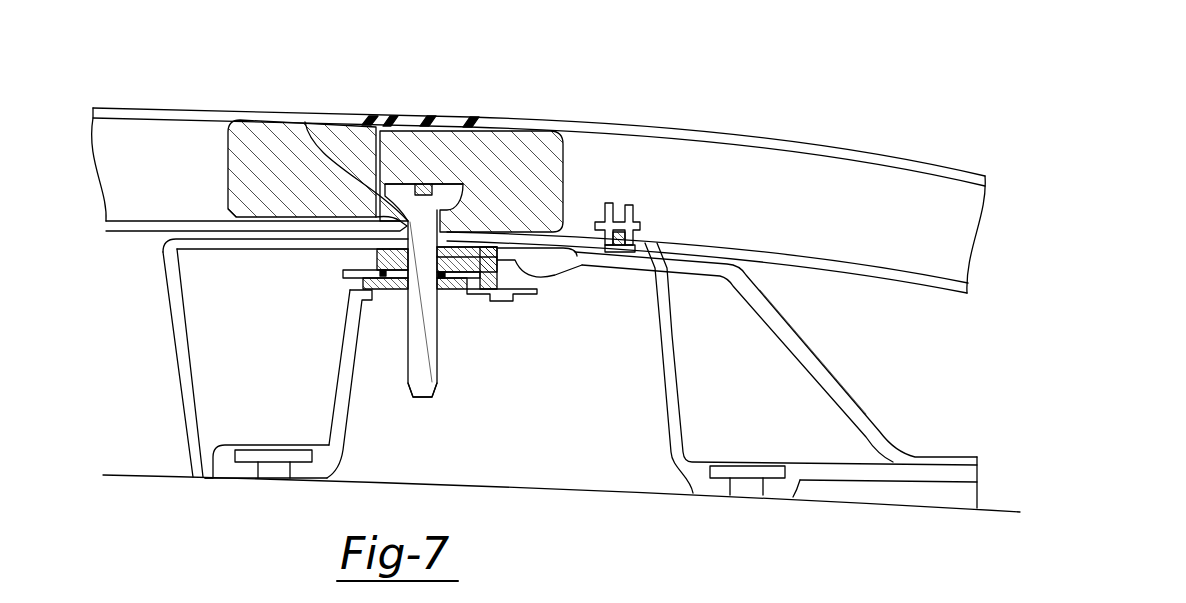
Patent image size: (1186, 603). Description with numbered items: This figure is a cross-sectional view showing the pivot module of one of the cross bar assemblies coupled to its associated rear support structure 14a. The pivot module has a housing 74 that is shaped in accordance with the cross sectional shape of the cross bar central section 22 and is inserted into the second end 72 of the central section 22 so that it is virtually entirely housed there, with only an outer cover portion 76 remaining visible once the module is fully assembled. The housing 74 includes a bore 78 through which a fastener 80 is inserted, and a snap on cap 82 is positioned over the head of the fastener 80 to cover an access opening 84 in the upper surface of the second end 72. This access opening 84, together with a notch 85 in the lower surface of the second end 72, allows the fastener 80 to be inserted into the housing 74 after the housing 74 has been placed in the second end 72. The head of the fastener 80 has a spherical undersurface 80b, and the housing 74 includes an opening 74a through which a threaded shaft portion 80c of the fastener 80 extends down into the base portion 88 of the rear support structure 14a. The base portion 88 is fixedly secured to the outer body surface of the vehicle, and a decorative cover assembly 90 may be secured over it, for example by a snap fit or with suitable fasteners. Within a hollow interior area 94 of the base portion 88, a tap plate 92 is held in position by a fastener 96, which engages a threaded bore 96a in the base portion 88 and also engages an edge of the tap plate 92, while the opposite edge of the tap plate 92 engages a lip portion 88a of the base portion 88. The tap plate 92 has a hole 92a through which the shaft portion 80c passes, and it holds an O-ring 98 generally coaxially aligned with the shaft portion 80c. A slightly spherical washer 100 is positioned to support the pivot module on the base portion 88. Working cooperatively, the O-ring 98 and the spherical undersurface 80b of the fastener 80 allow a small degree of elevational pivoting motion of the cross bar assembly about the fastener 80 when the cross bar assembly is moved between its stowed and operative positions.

The central section 22 is at (106, 110).
The second end 72 is at (218, 112).
The housing 74 is at (278, 142).
The opening 74a is at (313, 140).
The bore 78 is at (376, 124).
The fastener 80 is at (452, 104).
The spherical undersurface 80b is at (402, 193).
The shaft portion 80c is at (458, 443).
The snap on cap 82 is at (430, 117).
The access opening 84 is at (481, 118).
The outer cover portion 76 is at (557, 155).
The notch 85 is at (405, 222).
The base portion 88 is at (672, 403).
The lip portion 88a is at (373, 363).
The spherical washer 100 is at (393, 243).
The O-ring 98 is at (378, 275).
The tap plate 92 is at (505, 360).
The hole 92a is at (477, 386).
The fastener 96 is at (540, 322).
The threaded bore 96a is at (592, 328).
The decorative cover assembly 90 is at (850, 413).
The rear support structure 14a is at (858, 310).
The hollow interior area 94 is at (597, 448).